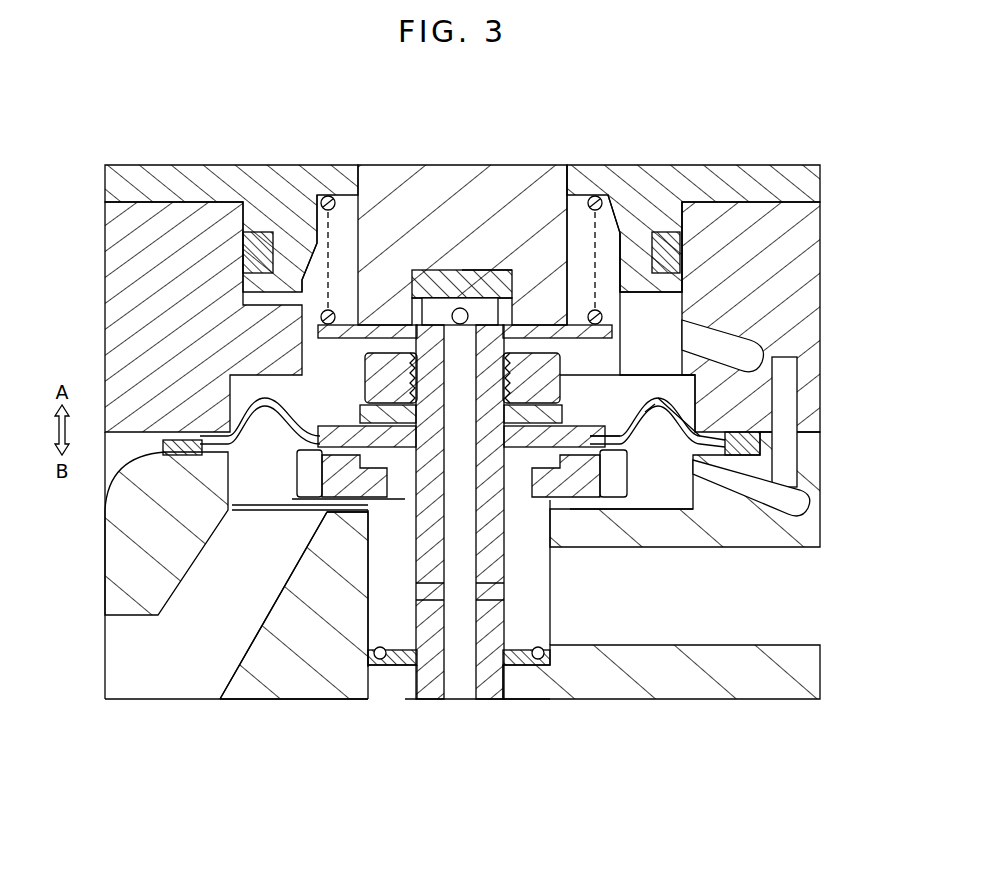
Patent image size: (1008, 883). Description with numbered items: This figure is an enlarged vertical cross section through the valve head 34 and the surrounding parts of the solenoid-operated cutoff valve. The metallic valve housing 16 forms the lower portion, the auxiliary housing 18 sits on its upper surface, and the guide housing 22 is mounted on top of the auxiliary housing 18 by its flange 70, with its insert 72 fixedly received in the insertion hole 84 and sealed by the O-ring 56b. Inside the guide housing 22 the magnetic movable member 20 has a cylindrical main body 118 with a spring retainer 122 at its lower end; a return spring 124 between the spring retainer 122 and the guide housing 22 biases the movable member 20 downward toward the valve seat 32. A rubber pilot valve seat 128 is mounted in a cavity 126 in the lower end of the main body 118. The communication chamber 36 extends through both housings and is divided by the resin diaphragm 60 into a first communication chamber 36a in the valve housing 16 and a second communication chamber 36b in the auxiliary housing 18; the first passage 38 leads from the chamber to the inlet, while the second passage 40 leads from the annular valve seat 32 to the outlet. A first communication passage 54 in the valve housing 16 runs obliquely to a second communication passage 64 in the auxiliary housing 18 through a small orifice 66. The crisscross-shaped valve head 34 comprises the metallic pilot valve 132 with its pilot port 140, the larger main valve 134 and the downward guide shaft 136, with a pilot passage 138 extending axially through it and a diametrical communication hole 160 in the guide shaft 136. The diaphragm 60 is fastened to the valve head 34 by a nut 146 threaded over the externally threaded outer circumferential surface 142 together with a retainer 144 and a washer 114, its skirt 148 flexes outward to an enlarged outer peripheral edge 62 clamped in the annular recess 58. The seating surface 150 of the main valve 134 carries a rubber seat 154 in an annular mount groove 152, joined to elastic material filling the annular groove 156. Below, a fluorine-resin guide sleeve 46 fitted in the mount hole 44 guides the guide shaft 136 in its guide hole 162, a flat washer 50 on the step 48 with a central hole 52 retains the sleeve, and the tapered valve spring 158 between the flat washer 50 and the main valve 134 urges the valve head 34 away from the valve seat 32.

The valve housing 16 is at (672, 684).
The auxiliary housing 18 is at (800, 258).
The movable member 20 is at (525, 178).
The guide housing 22 is at (238, 176).
The valve seat 32 is at (590, 520).
The valve head 34 is at (295, 482).
The communication chamber 36 is at (243, 385).
The first communication chamber 36a is at (660, 550).
The second communication chamber 36b is at (690, 420).
The first passage 38 is at (300, 702).
The second passage 40 is at (790, 640).
The mount hole 44 is at (395, 692).
The guide sleeve 46 is at (518, 700).
The step 48 is at (548, 650).
The flat washer 50 is at (540, 685).
The hole 52 is at (345, 632).
The first communication passage 54 is at (728, 545).
The O-ring 56b is at (246, 250).
The annular recess 58 is at (162, 478).
The diaphragm 60 is at (660, 412).
The enlarged outer peripheral edge 62 is at (800, 462).
The second communication passage 64 is at (792, 350).
The orifice 66 is at (795, 380).
The flange 70 is at (800, 192).
The insert 72 is at (240, 216).
The insertion hole 84 is at (680, 198).
The washer 114 is at (355, 405).
The main body 118 is at (390, 170).
The spring retainer 122 is at (338, 330).
The return spring 124 is at (598, 196).
The cavity 126 is at (440, 268).
The pilot valve seat 128 is at (480, 268).
The pilot valve 132 is at (598, 243).
The main valve 134 is at (622, 472).
The guide shaft 136 is at (510, 620).
The pilot passage 138 is at (460, 700).
The pilot port 140 is at (325, 243).
The externally threaded outer circumferential surface 142 is at (560, 368).
The retainer 144 is at (340, 401).
The nut 146 is at (616, 352).
The skirt 148 is at (262, 408).
The seating surface 150 is at (185, 458).
The annular mount groove 152 is at (605, 510).
The seat 154 is at (335, 500).
The annular groove 156 is at (627, 442).
The valve spring 158 is at (375, 692).
The communication hole 160 is at (405, 600).
The guide hole 162 is at (425, 700).